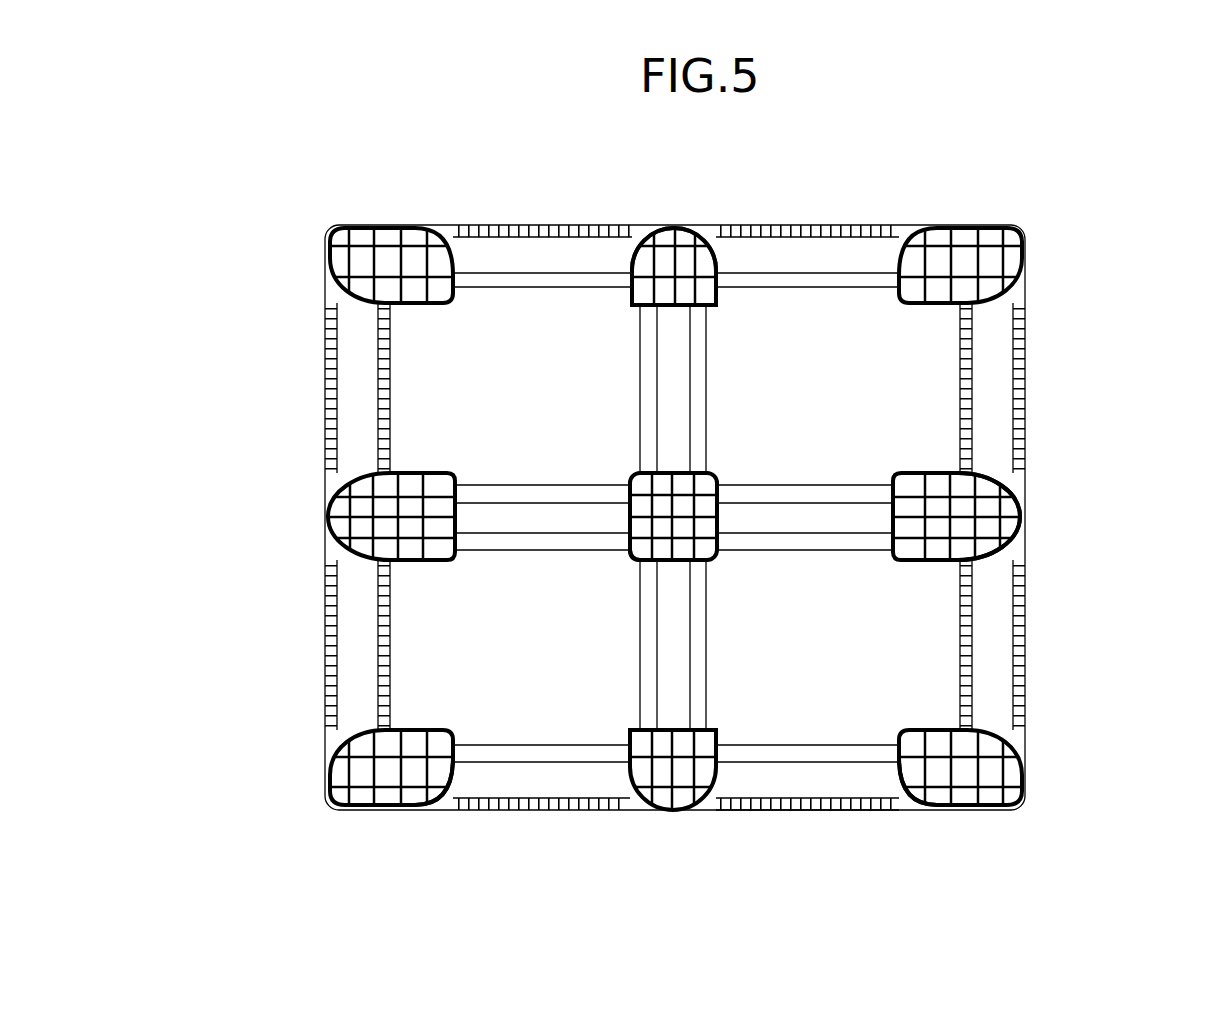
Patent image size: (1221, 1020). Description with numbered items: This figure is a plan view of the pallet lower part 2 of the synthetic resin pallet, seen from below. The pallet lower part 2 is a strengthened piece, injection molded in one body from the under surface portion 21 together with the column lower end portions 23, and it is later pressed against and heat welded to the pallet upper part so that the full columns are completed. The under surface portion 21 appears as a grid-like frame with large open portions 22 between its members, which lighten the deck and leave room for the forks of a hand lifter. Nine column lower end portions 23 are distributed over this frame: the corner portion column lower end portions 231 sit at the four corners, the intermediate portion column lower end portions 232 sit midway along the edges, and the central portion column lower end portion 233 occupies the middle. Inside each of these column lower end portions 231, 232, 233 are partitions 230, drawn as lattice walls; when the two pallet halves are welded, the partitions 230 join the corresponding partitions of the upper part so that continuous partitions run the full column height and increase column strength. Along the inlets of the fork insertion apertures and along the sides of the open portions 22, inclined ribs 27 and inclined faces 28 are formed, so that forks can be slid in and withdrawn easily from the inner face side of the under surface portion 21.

The pallet lower part 2 is at (1028, 230).
The under surface portion 21 is at (860, 790).
The open portions 22 is at (568, 705).
The column lower end portions 23 is at (690, 526).
The corner portion column lower end portions 231 is at (458, 802).
The intermediate portion column lower end portions 232 is at (622, 235).
The central portion column lower end portion 233 is at (628, 565).
The inclined ribs 27 is at (815, 228).
The inclined faces 28 is at (490, 285).
The partitions 230 is at (700, 240).